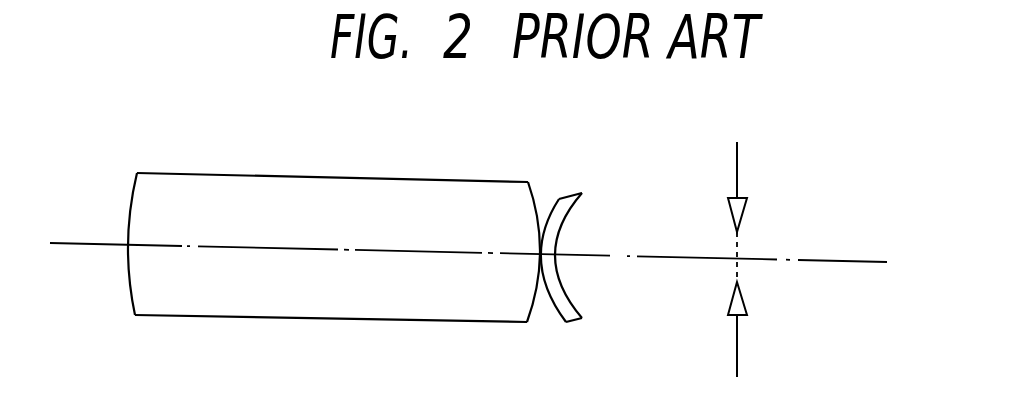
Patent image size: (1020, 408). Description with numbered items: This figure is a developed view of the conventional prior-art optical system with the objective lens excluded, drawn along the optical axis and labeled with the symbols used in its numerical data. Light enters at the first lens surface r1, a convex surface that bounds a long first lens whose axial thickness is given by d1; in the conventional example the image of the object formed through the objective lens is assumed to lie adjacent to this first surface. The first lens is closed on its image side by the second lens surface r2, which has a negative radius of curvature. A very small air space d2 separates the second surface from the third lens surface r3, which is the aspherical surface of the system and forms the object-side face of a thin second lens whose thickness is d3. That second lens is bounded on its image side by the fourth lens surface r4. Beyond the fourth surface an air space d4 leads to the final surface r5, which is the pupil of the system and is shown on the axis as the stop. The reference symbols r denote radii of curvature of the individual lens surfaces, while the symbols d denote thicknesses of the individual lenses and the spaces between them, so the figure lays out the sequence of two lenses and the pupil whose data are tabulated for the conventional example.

The first lens surface r1 is at (133, 200).
The second lens surface r2 is at (538, 196).
The third lens surface r3 is at (552, 215).
The fourth lens surface r4 is at (579, 215).
The pupil r5 is at (737, 190).
The thickness of first lens d1 is at (262, 247).
The air space between first and second lenses d2 is at (541, 262).
The thickness of second lens d3 is at (556, 258).
The space between second lens and pupil d4 is at (675, 260).